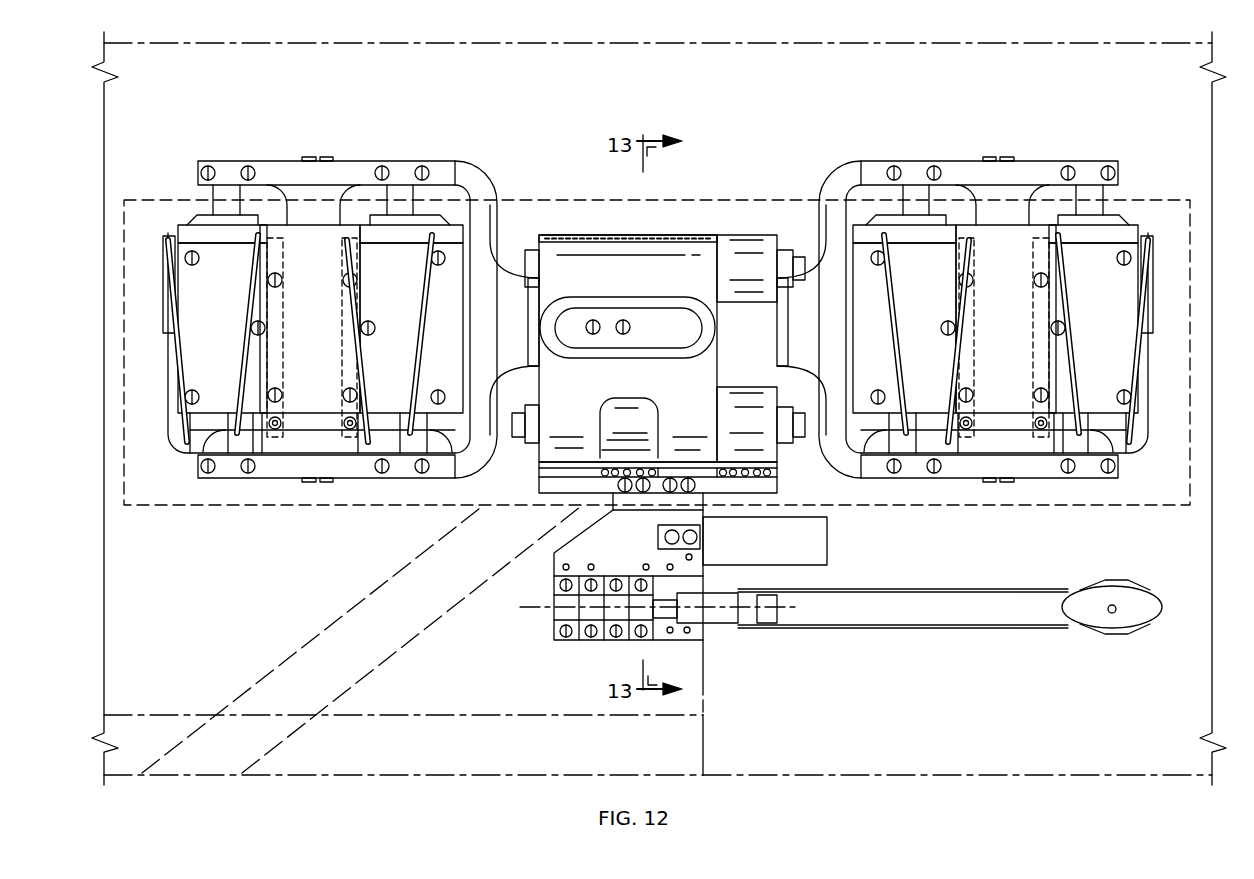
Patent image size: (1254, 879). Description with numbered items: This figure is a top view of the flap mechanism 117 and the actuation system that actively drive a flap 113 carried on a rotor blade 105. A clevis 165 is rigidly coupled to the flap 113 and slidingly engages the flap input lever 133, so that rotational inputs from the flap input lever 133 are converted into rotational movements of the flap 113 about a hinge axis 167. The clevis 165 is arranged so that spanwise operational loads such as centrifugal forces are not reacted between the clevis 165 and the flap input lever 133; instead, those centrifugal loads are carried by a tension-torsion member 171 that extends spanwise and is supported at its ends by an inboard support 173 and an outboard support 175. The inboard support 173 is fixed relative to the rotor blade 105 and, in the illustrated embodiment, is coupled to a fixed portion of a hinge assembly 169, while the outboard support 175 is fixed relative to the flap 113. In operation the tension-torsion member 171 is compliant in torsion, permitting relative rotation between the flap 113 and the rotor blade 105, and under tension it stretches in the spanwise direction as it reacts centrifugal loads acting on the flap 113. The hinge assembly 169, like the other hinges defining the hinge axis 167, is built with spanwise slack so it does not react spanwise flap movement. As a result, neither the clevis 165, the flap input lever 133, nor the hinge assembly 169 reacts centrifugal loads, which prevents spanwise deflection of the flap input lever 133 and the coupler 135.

The rotor blade 105 is at (420, 775).
The flap 113 is at (973, 775).
The flap mechanism 117 is at (727, 705).
The flap input lever 133 is at (637, 551).
The coupler 135 is at (540, 478).
The clevis 165 is at (827, 540).
The hinge axis 167 is at (530, 608).
The hinge assembly 169 is at (570, 640).
The tension-torsion member 171 is at (910, 628).
The inboard support 173 is at (717, 625).
The outboard support 175 is at (1110, 638).